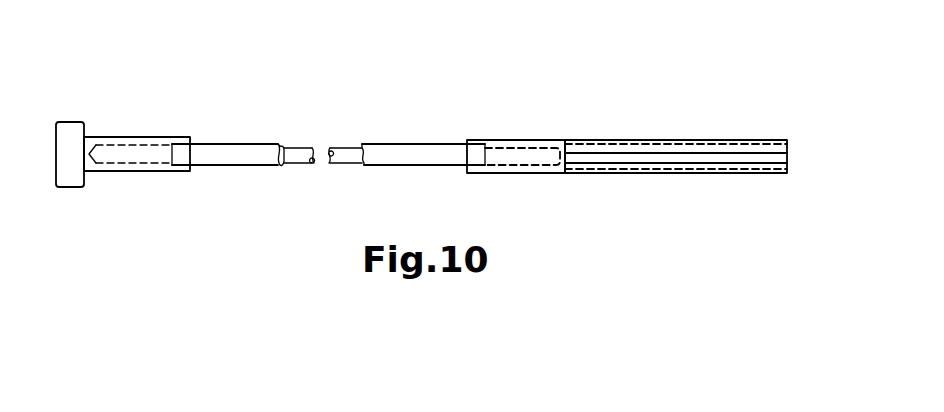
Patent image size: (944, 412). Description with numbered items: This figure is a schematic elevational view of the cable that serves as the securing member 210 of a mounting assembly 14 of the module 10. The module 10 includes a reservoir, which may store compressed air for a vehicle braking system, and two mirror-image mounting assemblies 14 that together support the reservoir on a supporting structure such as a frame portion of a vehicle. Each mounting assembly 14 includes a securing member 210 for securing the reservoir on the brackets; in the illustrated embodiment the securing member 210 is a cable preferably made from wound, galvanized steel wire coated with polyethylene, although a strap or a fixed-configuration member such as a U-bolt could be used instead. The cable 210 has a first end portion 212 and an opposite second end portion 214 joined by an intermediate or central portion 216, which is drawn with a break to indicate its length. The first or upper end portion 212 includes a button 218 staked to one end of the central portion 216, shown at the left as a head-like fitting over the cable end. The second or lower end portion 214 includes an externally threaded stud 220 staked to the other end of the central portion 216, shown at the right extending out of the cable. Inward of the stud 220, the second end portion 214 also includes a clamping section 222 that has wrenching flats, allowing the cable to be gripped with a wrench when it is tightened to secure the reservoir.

The module 10 is at (214, 220).
The mounting assembly 14 is at (312, 221).
The securing member 210 is at (446, 133).
The first end portion 212 is at (162, 132).
The second end portion 214 is at (692, 128).
The central portion 216 is at (256, 166).
The button 218 is at (70, 122).
The externally threaded stud 220 is at (680, 174).
The clamping section 222 is at (517, 174).